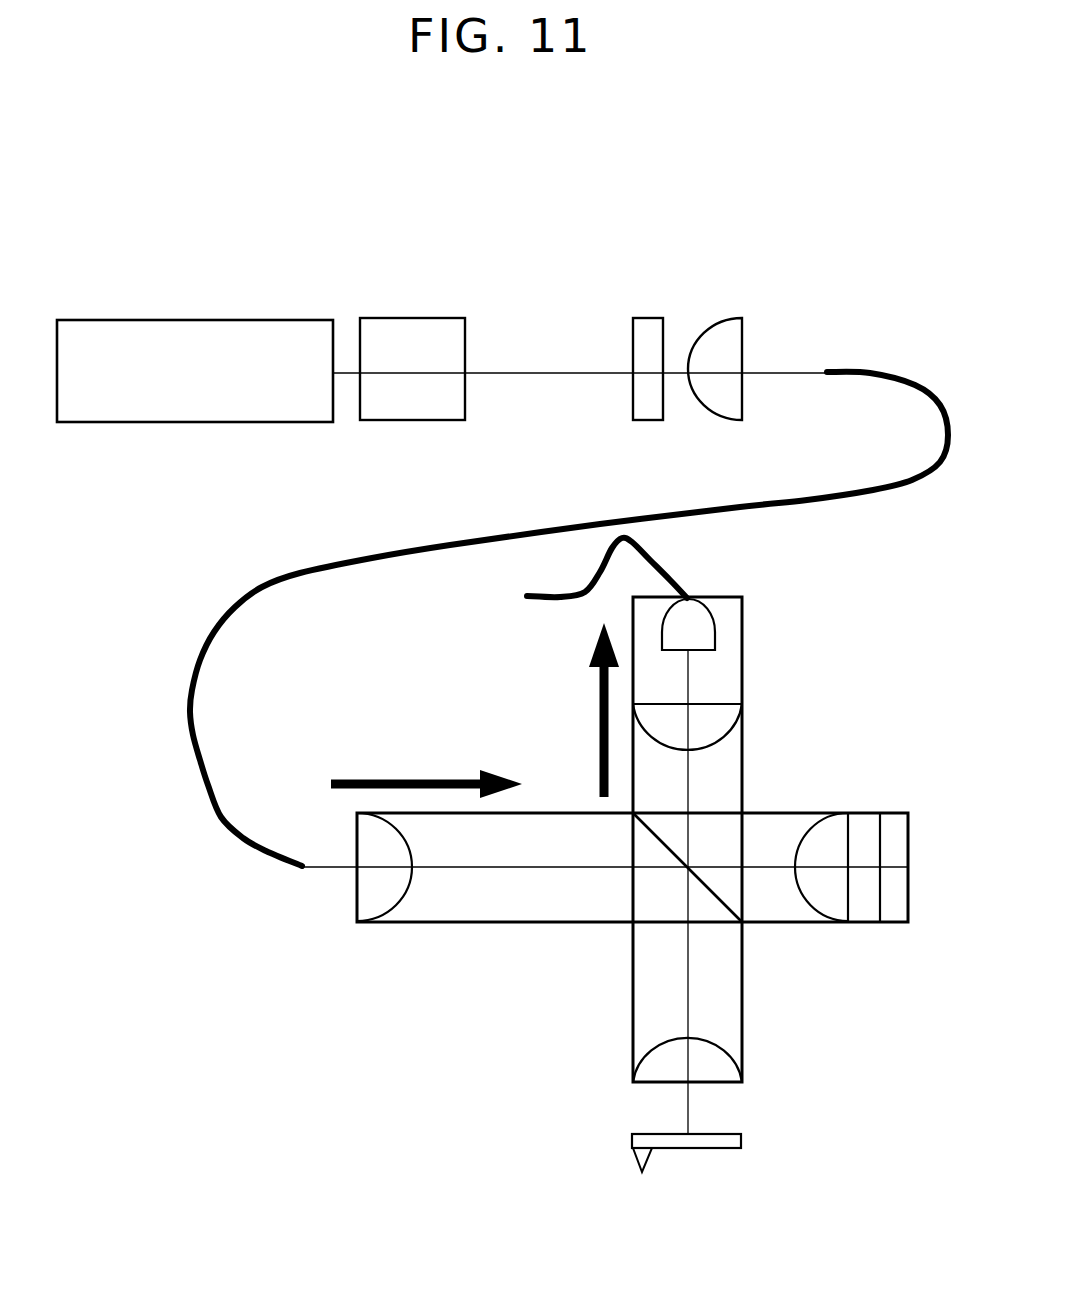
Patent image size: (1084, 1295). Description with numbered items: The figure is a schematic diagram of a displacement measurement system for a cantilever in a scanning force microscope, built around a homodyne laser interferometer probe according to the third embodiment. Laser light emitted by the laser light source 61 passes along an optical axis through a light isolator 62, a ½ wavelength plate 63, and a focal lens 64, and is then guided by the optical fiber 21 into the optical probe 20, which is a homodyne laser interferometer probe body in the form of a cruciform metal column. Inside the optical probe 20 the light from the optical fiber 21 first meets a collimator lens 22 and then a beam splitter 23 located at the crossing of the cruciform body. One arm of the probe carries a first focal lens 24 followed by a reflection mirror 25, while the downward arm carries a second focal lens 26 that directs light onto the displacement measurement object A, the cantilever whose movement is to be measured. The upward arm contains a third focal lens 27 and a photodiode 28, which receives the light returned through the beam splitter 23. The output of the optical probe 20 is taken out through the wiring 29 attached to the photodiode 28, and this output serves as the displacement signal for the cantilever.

The laser light source 61 is at (285, 318).
The light isolator 62 is at (436, 318).
The ½ wavelength plate 63 is at (645, 318).
The focal lens 64 is at (728, 318).
The optical fiber 21 is at (376, 553).
The optical probe 20 is at (562, 812).
The collimator lens 22 is at (368, 907).
The beam splitter 23 is at (723, 822).
The first focal lens 24 is at (838, 908).
The reflection mirror 25 is at (892, 908).
The second focal lens 26 is at (642, 1071).
The third focal lens 27 is at (730, 715).
The photodiode 28 is at (715, 626).
The wiring 29 is at (670, 569).
The displacement measurement object A is at (632, 1138).